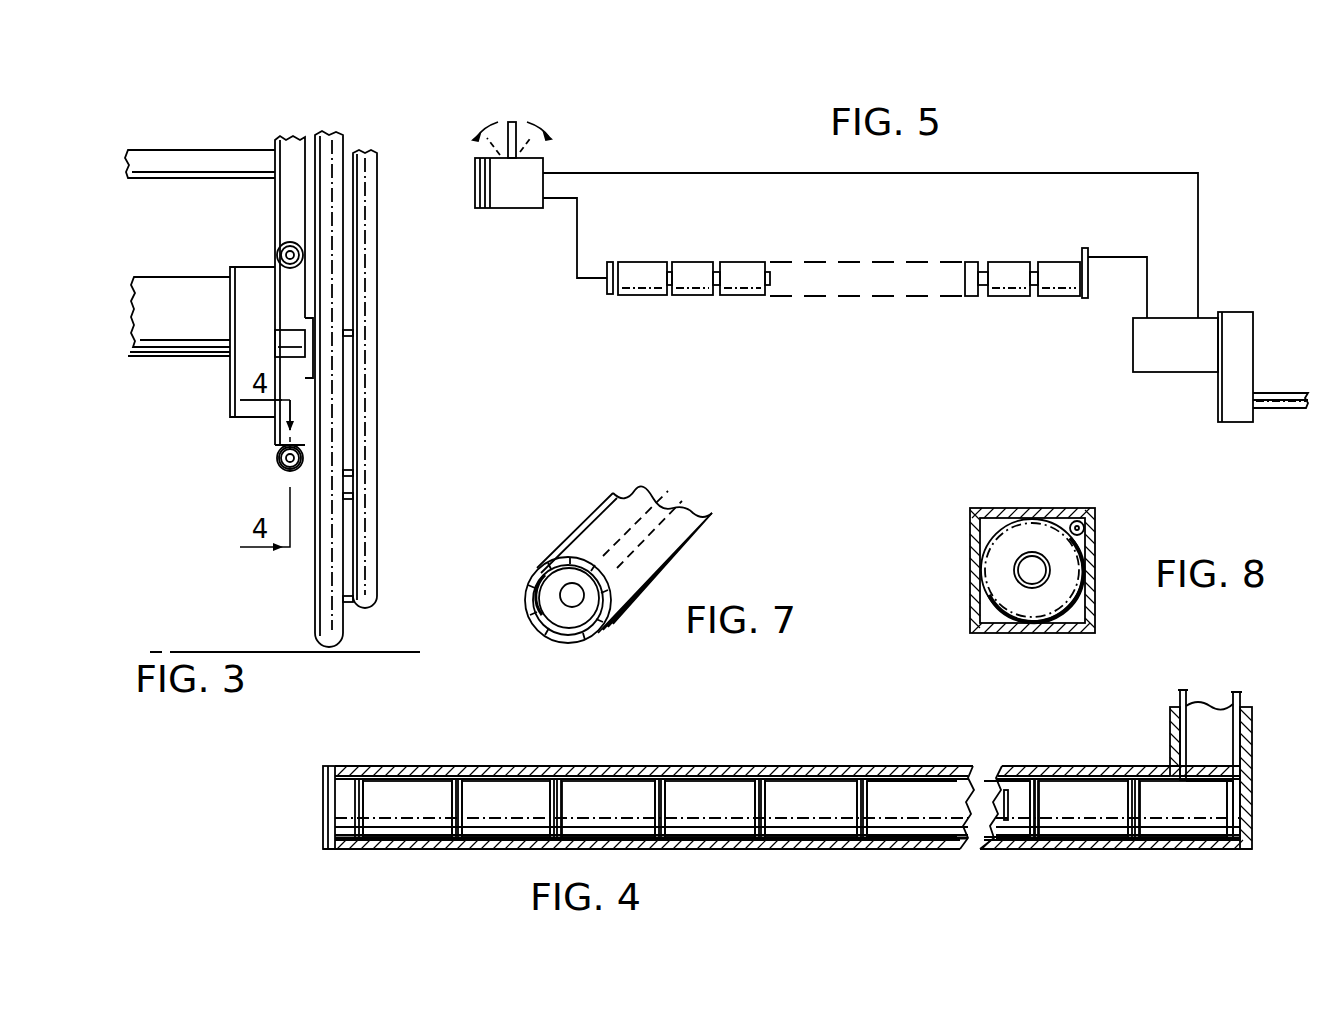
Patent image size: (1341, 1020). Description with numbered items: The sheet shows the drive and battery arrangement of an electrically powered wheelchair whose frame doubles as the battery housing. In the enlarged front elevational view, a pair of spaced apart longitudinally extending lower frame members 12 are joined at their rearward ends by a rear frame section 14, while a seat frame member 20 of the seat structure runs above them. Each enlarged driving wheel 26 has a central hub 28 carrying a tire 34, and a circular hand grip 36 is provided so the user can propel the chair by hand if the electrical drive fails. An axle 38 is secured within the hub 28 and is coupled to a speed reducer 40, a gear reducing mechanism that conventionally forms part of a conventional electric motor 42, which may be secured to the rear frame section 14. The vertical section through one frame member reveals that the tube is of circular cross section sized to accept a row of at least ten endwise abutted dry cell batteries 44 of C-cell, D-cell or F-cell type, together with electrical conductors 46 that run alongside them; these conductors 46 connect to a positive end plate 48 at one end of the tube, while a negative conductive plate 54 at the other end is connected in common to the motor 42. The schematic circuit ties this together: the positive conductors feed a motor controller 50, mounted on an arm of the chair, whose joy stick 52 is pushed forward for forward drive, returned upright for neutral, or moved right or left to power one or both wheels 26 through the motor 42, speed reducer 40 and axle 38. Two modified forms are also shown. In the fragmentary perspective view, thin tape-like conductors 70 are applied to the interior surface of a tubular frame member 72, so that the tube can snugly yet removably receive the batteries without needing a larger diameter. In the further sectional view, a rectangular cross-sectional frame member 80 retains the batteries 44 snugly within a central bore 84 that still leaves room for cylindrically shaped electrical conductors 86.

In FIG. 3, the lower frame member 12 is at (278, 473).
In FIG. 4, the lower frame member 12 is at (775, 765).
In FIG. 3, the rear frame section 14 is at (222, 157).
In FIG. 4, the rear frame section 14 is at (1250, 729).
In FIG. 3, the seat frame member 20 is at (280, 248).
In FIG. 3, the driving wheel 26 is at (325, 273).
In FIG. 3, the central hub 28 is at (347, 331).
In FIG. 3, the tire 34 is at (325, 554).
In FIG. 3, the hand grip 36 is at (370, 553).
In FIG. 3, the axle 38 is at (288, 339).
In FIG. 5, the axle 38 is at (1277, 399).
In FIG. 3, the speed reducer 40 is at (232, 379).
In FIG. 5, the speed reducer 40 is at (1232, 314).
In FIG. 3, the electric motor 42 is at (168, 281).
In FIG. 5, the electric motor 42 is at (1132, 353).
In FIG. 3, the dry cell batteries 44 is at (282, 448).
In FIG. 5, the dry cell batteries 44 is at (740, 292).
In FIG. 7, the dry cell batteries 44 is at (542, 588).
In FIG. 8, the dry cell batteries 44 is at (997, 569).
In FIG. 4, the dry cell batteries 44 is at (497, 798).
In FIG. 3, the electrical conductors 46 is at (286, 451).
In FIG. 4, the electrical conductors 46 is at (1007, 794).
In FIG. 5, the positive end plate 48 is at (610, 261).
In FIG. 4, the positive end plate 48 is at (364, 789).
In FIG. 5, the motor controller 50 is at (497, 184).
In FIG. 5, the joy stick 52 is at (516, 121).
In FIG. 5, the negative conductive plate 54 is at (1083, 249).
In FIG. 4, the negative conductive plate 54 is at (1227, 814).
In FIG. 7, the tape-like conductor 70 is at (663, 501).
In FIG. 7, the tubular frame member 72 is at (590, 531).
In FIG. 8, the rectangular cross-sectional frame member 80 is at (980, 511).
In FIG. 8, the central bore 84 is at (1072, 616).
In FIG. 8, the cylindrically shaped electrical conductors 86 is at (1085, 524).